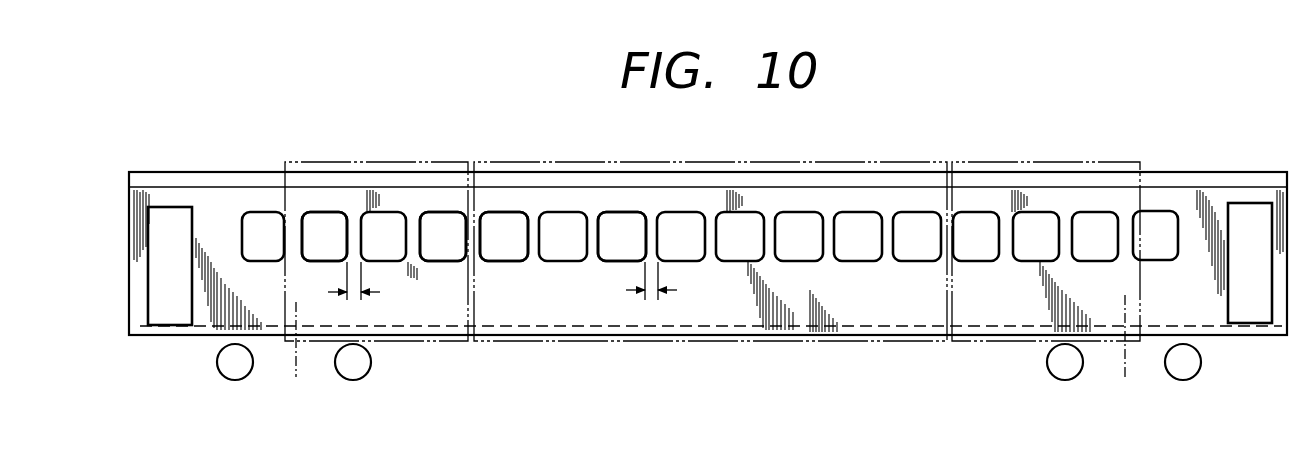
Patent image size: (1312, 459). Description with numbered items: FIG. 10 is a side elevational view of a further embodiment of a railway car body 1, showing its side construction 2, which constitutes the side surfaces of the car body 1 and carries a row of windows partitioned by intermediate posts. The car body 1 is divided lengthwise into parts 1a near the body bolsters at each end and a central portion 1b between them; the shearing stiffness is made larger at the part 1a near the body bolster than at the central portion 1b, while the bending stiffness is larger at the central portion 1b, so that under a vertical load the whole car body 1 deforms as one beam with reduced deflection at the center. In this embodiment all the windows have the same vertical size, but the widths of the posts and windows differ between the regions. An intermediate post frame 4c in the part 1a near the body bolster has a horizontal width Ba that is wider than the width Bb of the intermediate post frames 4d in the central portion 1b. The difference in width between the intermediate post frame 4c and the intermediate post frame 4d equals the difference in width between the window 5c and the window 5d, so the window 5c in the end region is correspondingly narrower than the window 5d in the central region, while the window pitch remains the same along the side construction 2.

The car body 1 is at (178, 168).
The side construction 2 is at (228, 198).
The part near the body bolster 1a is at (444, 162).
The central portion 1b is at (896, 162).
The intermediate post frame 4c is at (338, 232).
The window 5c is at (448, 250).
The window 5d is at (515, 225).
The intermediate post frame 4d is at (637, 232).
The width of the intermediate post frame near the body bolster Ba is at (370, 283).
The width of the intermediate post frame at the central part Bb is at (668, 282).